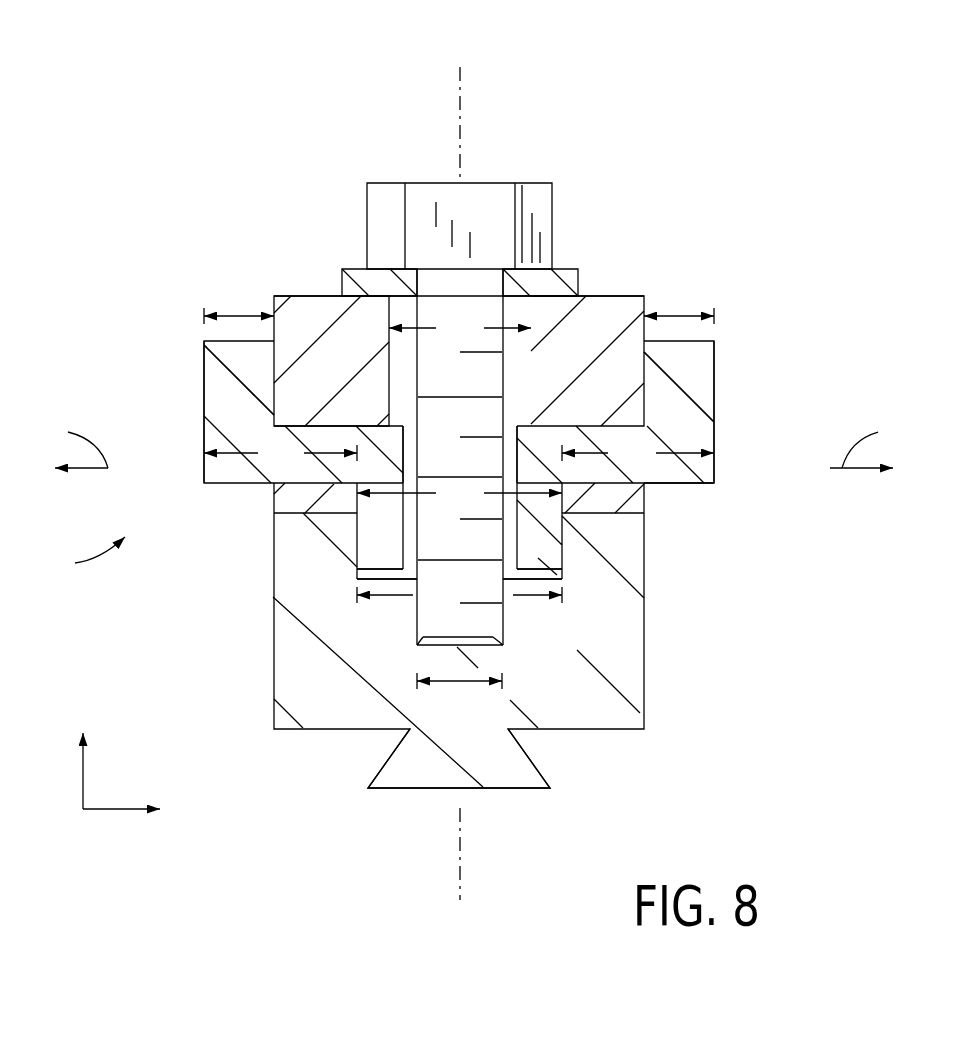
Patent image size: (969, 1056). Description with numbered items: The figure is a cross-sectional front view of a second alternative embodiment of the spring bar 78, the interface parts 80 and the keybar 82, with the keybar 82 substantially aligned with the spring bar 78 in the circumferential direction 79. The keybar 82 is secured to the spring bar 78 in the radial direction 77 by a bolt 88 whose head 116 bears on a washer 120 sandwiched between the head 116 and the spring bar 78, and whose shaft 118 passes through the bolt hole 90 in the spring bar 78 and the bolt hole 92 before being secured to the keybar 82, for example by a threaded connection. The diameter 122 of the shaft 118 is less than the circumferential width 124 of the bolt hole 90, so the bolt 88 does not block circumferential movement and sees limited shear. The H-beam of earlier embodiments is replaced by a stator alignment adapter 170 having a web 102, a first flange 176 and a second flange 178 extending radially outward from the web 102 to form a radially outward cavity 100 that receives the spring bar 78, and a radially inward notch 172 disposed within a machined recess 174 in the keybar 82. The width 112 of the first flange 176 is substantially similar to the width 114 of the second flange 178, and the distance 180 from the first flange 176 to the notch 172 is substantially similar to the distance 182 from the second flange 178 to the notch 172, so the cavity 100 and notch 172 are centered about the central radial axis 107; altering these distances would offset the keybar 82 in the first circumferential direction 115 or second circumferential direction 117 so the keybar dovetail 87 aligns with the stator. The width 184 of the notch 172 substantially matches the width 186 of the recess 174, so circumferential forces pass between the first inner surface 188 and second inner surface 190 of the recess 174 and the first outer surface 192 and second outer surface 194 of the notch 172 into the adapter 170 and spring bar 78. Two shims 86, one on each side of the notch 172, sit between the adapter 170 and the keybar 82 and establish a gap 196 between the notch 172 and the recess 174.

The radial direction 77 is at (83, 800).
The spring bar 78 is at (613, 295).
The circumferential direction 79 is at (128, 812).
The interface parts 80 is at (83, 558).
The keybar 82 is at (492, 688).
The shim 86 is at (350, 524).
The keybar dovetail 87 is at (425, 788).
The bolt 88 is at (426, 190).
The bolt hole 90 is at (338, 418).
The bolt hole 92 is at (481, 519).
The radially outward cavity 100 is at (392, 398).
The web 102 is at (663, 470).
The central radial axis 107 is at (460, 80).
The width of the first flange 112 is at (687, 313).
The width of the second flange 114 is at (242, 313).
The first circumferential direction 115 is at (875, 442).
The head 116 is at (365, 200).
The second circumferential direction 117 is at (67, 442).
The shaft 118 is at (487, 617).
The washer 120 is at (338, 280).
The diameter of the shaft 122 is at (457, 681).
The circumferential width of the bolt hole 124 is at (460, 328).
The stator alignment adapter 170 is at (453, 425).
The radially inward notch 172 is at (562, 572).
The machined recess 174 is at (413, 595).
The first flange 176 is at (697, 388).
The second flange 178 is at (215, 388).
The distance 180 is at (638, 453).
The distance 182 is at (280, 453).
The width of the notch 184 is at (459, 493).
The width of the machined recess 186 is at (530, 597).
The first inner surface 188 is at (560, 542).
The second inner surface 190 is at (365, 538).
The first outer surface 192 is at (562, 550).
The second outer surface 194 is at (357, 571).
The gap 196 is at (357, 583).